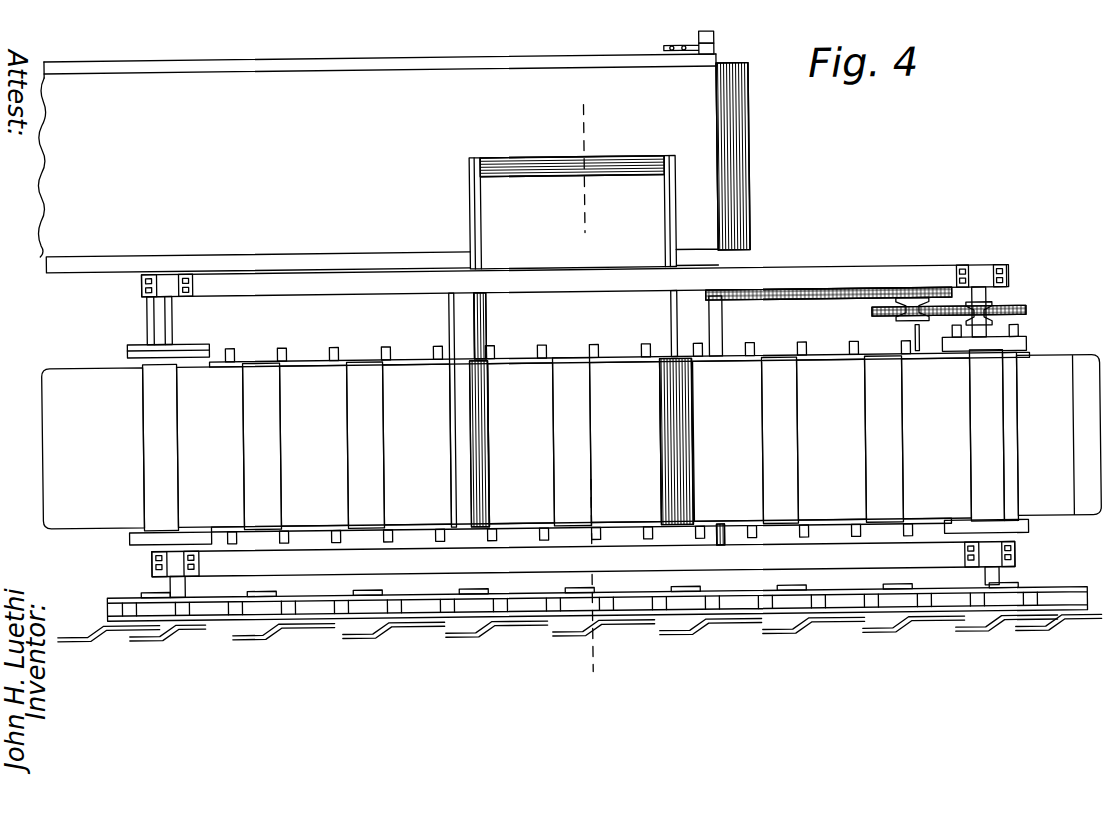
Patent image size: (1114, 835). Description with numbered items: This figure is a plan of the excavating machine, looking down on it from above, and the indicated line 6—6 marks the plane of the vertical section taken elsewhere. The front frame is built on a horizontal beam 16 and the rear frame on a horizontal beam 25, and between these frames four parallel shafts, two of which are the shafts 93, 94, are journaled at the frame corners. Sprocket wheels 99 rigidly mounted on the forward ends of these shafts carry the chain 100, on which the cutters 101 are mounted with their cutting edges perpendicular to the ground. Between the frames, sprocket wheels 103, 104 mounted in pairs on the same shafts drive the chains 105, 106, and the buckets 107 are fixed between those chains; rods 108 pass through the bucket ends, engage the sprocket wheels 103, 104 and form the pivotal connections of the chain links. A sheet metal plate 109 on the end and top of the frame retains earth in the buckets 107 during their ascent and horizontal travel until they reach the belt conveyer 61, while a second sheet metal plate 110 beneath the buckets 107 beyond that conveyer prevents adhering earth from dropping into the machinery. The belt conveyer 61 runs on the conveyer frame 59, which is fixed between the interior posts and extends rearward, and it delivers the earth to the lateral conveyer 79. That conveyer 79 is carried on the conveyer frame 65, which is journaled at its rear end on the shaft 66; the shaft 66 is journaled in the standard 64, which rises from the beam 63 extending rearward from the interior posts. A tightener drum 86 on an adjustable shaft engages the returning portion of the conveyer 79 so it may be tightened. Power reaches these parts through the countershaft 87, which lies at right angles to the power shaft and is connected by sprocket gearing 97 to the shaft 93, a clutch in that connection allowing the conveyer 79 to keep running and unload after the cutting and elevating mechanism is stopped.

The section line 6 is at (590, 389).
The horizontal beam 16 is at (583, 559).
The horizontal beam 25 is at (574, 281).
The conveyer frame 59 is at (472, 229).
The belt conveyer 61 is at (660, 405).
The beam 63 is at (719, 38).
The standard 64 is at (719, 52).
The conveyer frame 65 is at (353, 50).
The shaft 66 is at (723, 323).
The conveyer 79 is at (393, 163).
The tightener drum 86 is at (829, 306).
The countershaft 87 is at (905, 338).
The shaft 93 is at (1010, 299).
The shaft 94 is at (173, 319).
The sprocket gearing 97 is at (967, 330).
The sprocket wheels 99 is at (160, 616).
The chain 100 is at (291, 594).
The cutters 101 is at (286, 630).
The sprocket wheels 103 is at (128, 544).
The sprocket wheels 104 is at (135, 345).
The chain 105 is at (581, 534).
The chain 106 is at (619, 347).
The buckets 107 is at (572, 441).
The rods 108 is at (1012, 397).
The sheet metal plate 109 is at (762, 446).
The sheet metal plate 110 is at (500, 430).